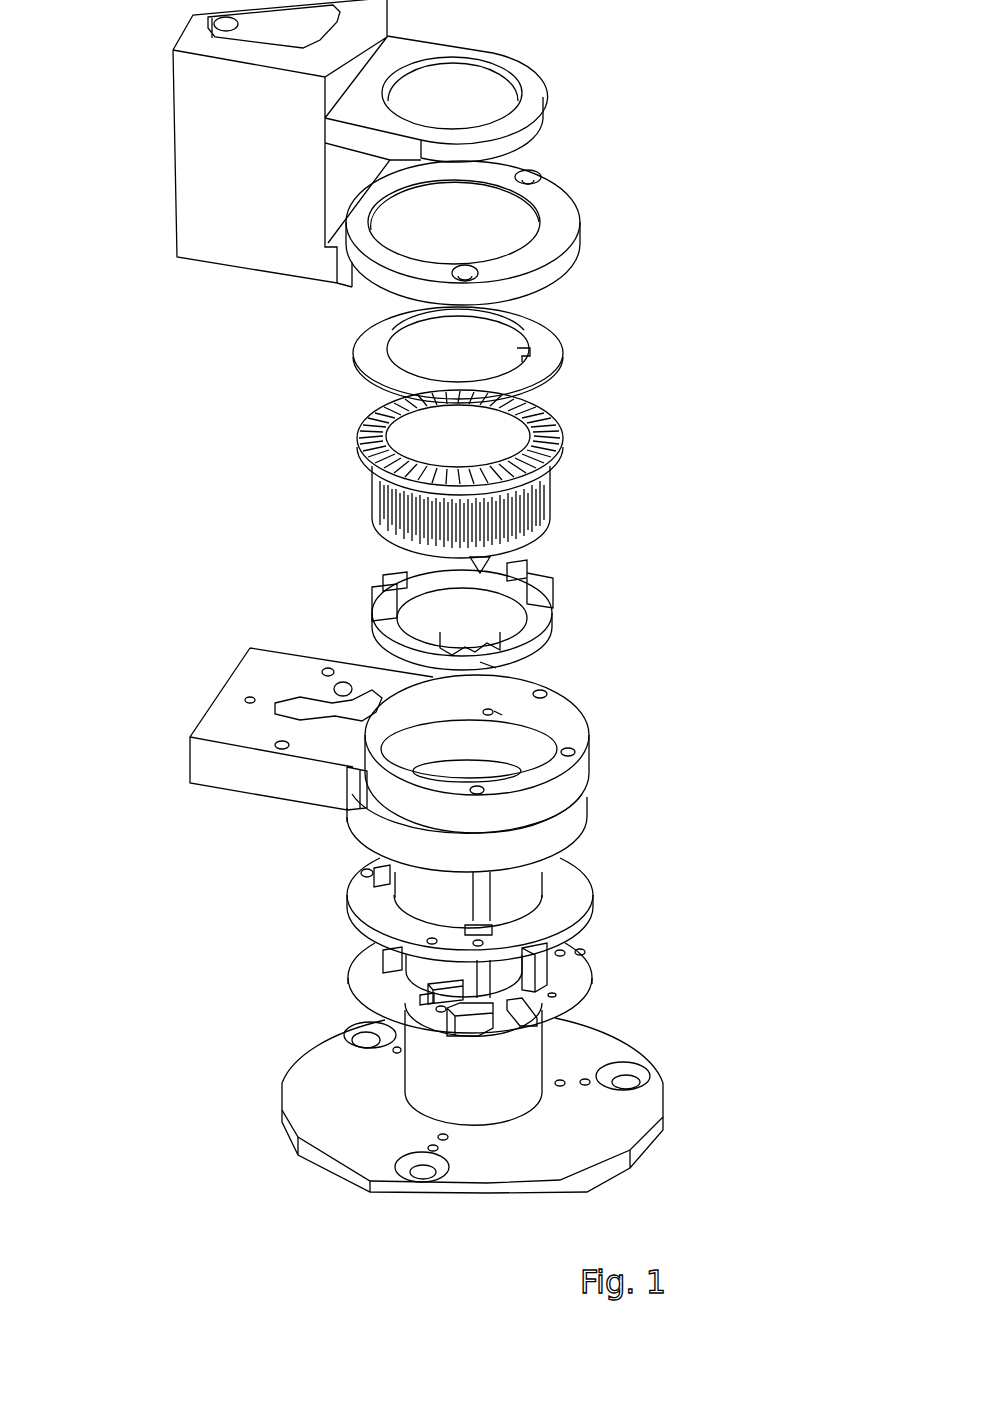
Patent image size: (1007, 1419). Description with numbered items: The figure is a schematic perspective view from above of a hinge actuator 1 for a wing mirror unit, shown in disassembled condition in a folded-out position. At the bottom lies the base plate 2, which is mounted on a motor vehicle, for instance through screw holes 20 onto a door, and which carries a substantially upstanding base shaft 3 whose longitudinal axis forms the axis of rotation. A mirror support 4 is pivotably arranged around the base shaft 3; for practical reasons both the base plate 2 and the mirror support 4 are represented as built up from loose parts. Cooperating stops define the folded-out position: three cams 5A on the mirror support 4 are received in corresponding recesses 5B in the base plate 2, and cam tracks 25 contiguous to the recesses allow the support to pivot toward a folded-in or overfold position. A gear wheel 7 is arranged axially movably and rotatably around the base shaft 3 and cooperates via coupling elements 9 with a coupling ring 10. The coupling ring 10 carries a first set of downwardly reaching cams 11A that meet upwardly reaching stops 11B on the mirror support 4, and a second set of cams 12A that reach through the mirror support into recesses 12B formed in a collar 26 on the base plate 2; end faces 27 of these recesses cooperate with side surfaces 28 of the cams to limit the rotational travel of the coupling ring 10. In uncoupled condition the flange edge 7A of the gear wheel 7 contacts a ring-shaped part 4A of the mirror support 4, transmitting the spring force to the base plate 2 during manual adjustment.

The hinge actuator 1 is at (173, 1102).
The base plate 2 is at (582, 965).
The base shaft 3 is at (515, 893).
The mirror support 4 is at (205, 218).
The ring-shaped part 4A is at (555, 215).
The cams 5A is at (510, 957).
The recesses 5B is at (470, 1027).
The gear wheel 7 is at (372, 497).
The flange edge 7A is at (368, 440).
The coupling elements 9 is at (470, 640).
The coupling ring 10 is at (538, 625).
The cams 11A is at (490, 665).
The stops 11B is at (477, 930).
The cams 12A is at (488, 712).
The recesses 12B is at (408, 977).
The screw holes 20 is at (628, 1082).
The cam tracks 25 is at (360, 1047).
The collar 26 is at (427, 997).
The end faces 27 is at (547, 984).
The side surfaces 28 is at (490, 712).